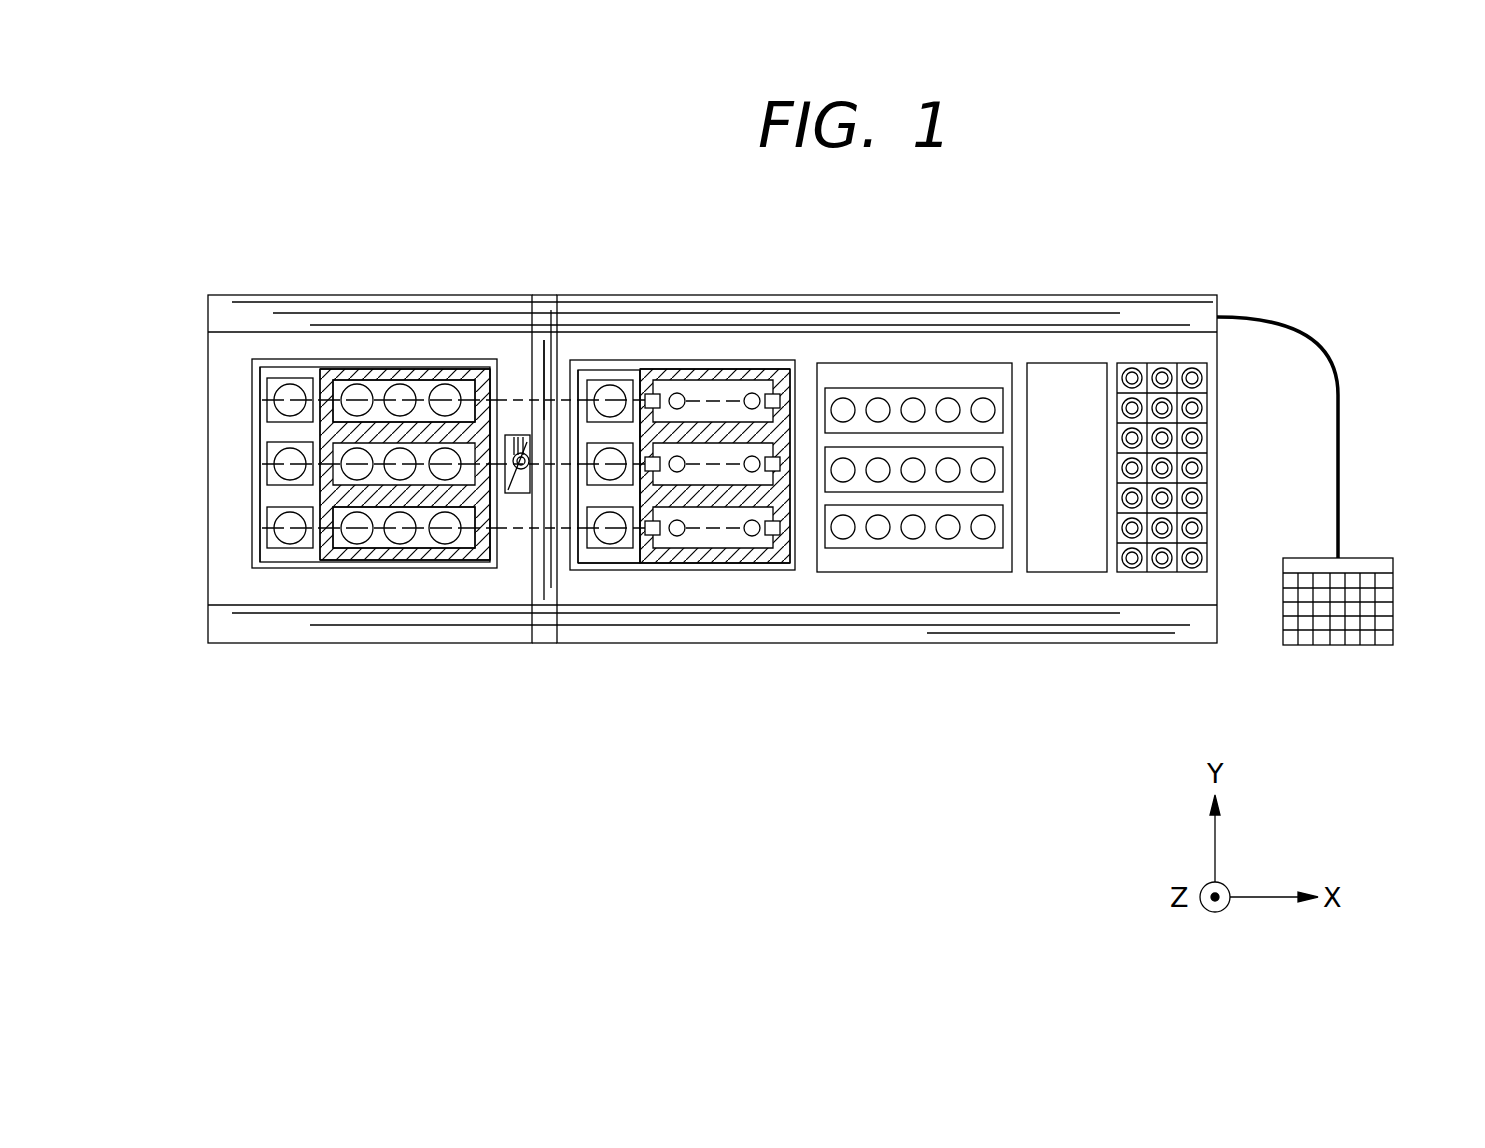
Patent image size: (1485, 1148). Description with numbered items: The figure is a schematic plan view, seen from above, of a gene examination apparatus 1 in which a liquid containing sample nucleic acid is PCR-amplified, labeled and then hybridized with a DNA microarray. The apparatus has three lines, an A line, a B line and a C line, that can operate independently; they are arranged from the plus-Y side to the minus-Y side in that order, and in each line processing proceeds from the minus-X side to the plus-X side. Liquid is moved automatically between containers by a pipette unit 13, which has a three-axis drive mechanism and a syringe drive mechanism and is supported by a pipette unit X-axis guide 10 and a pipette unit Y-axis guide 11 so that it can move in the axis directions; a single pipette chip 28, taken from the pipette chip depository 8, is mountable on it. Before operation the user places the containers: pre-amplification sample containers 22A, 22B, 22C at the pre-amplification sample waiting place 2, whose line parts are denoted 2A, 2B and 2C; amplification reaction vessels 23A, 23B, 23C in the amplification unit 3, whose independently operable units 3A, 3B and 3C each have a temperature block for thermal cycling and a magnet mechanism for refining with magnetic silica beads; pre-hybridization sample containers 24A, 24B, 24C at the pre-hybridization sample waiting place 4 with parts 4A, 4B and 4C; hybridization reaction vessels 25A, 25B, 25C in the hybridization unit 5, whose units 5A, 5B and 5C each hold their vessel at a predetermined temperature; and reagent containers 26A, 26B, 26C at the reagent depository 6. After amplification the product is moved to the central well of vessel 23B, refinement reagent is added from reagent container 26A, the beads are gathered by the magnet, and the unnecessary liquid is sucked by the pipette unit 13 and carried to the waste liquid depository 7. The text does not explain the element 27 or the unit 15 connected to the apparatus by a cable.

The gene examination apparatus 1 is at (1075, 205).
The pipette unit X-axis guide 10 is at (462, 302).
The pipette unit Y-axis guide 11 is at (543, 640).
The connecting portion 27 is at (544, 340).
The pipette unit 13 is at (513, 493).
The pre-amplification sample waiting place 2 is at (277, 577).
The pre-amplification waiting place on A line 2A is at (262, 405).
The pre-amplification waiting place on B line 2B is at (262, 468).
The pre-amplification waiting place on C line 2C is at (262, 531).
The pre-amplification sample container 22A is at (262, 382).
The pre-amplification sample container 22B is at (262, 447).
The pre-amplification sample container 22C is at (262, 510).
The amplification unit 3 is at (367, 577).
The amplification unit of A line 3A is at (427, 372).
The amplification unit of B line 3B is at (506, 427).
The amplification unit of C line 3C is at (427, 567).
The amplification reaction vessel 23A is at (376, 372).
The amplification reaction vessel 23B is at (330, 372).
The amplification reaction vessel 23C is at (347, 553).
The pre-hybridization sample waiting place 4 is at (618, 577).
The pre-hybridization waiting place on A line 4A is at (640, 372).
The pre-hybridization waiting place on B line 4B is at (572, 445).
The pre-hybridization waiting place on C line 4C is at (634, 567).
The pre-hybridization sample container 24A is at (615, 377).
The pre-hybridization sample container 24B is at (650, 378).
The pre-hybridization sample container 24C is at (598, 565).
The hybridization unit 5 is at (720, 577).
The hybridization unit of A line 5A is at (795, 395).
The hybridization unit of B line 5B is at (790, 462).
The hybridization unit of C line 5C is at (792, 530).
The hybridization reaction vessel 25A is at (728, 372).
The hybridization reaction vessel 25B is at (722, 428).
The hybridization reaction vessel 25C is at (755, 567).
The reagent depository 6 is at (920, 577).
The reagent container 26A is at (935, 386).
The reagent container 26B is at (1003, 463).
The reagent container 26C is at (985, 550).
The waste liquid depository 7 is at (1073, 577).
The pipette chip depository 8 is at (1165, 577).
The pipette chip 28 is at (1162, 368).
The display unit 15 is at (1388, 612).